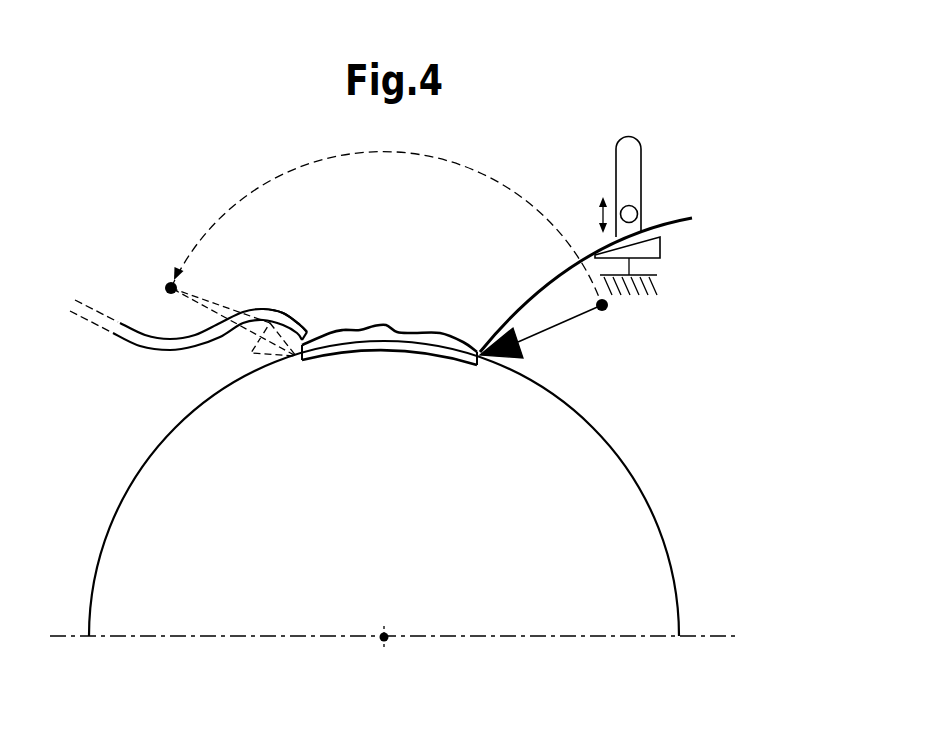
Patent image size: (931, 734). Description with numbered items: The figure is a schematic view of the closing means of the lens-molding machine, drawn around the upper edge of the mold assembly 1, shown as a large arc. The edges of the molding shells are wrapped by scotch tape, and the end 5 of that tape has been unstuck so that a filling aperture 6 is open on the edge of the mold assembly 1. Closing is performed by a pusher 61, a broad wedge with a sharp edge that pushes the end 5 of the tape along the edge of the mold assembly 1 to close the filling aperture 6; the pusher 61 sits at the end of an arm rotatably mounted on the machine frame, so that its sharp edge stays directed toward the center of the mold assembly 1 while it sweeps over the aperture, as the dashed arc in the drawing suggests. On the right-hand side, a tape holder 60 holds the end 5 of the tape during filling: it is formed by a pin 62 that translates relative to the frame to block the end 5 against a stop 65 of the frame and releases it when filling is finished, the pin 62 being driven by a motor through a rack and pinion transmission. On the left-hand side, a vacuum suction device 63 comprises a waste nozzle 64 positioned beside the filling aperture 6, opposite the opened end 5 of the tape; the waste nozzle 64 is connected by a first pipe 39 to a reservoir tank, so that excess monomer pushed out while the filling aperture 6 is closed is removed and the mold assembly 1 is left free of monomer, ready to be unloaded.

The mold assembly 1 is at (664, 530).
The end of the scotch tape 5 is at (676, 220).
The filling aperture 6 is at (258, 344).
The first pipe 39 is at (132, 343).
The pressing device 60 is at (687, 156).
The pusher 61 is at (523, 345).
The pin 62 is at (629, 205).
The vacuum suction device 63 is at (143, 322).
The waste nozzle 64 is at (284, 312).
The stop 65 is at (661, 243).